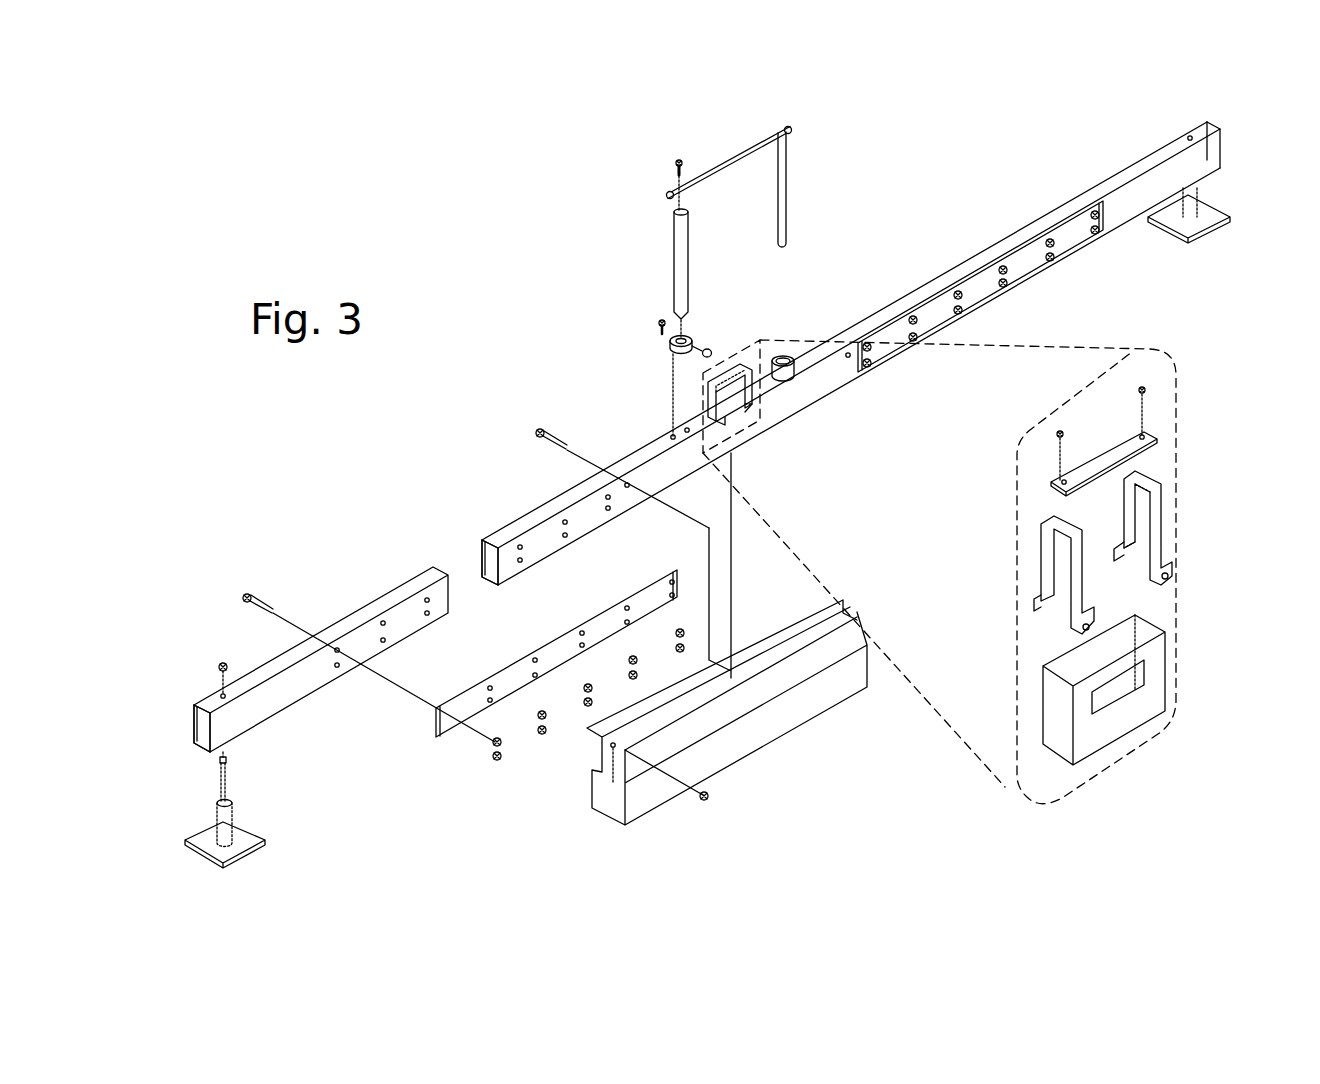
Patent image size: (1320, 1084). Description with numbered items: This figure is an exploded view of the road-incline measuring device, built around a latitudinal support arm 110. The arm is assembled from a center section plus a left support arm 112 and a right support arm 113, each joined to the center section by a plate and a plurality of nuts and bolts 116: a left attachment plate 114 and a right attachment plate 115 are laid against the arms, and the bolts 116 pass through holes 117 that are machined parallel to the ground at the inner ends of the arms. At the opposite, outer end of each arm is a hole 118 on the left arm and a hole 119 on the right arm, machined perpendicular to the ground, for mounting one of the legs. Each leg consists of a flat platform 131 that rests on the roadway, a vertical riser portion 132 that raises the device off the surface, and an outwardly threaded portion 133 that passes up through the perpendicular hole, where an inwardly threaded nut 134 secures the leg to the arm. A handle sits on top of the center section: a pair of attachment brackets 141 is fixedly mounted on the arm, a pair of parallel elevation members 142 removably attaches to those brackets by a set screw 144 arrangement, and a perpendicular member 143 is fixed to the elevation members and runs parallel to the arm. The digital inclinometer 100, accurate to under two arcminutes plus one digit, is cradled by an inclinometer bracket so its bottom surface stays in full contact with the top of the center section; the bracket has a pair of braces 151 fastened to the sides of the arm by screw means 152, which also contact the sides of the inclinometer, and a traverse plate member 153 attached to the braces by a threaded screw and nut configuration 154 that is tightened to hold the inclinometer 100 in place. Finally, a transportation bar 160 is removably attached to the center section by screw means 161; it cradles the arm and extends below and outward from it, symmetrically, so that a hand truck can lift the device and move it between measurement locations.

The digital inclinometer 100 is at (1125, 688).
The latitudinal support arm 110 is at (650, 447).
The left support arm 112 is at (279, 700).
The right support arm 113 is at (1148, 188).
The left attachment plate 114 is at (514, 680).
The right attachment plate 115 is at (985, 290).
The nuts and bolts 116 is at (262, 598).
The holes 117 is at (522, 542).
The hole 118 is at (215, 697).
The hole 119 is at (1192, 122).
The flat platform 131 is at (233, 858).
The vertical riser portion 132 is at (233, 817).
The outwardly threaded portion 133 is at (221, 790).
The inwardly threaded nut 134 is at (222, 660).
The attachment brackets 141 is at (672, 345).
The parallel elevation members 142 is at (676, 260).
The perpendicular member 143 is at (726, 160).
The set screw 144 is at (708, 350).
The braces 151 is at (1150, 480).
The screw means 152 is at (742, 416).
The traverse plate member 153 is at (1116, 445).
The threaded screw and nut configuration 154 is at (1060, 436).
The transportation bar 160 is at (792, 714).
The screw means 161 is at (706, 800).